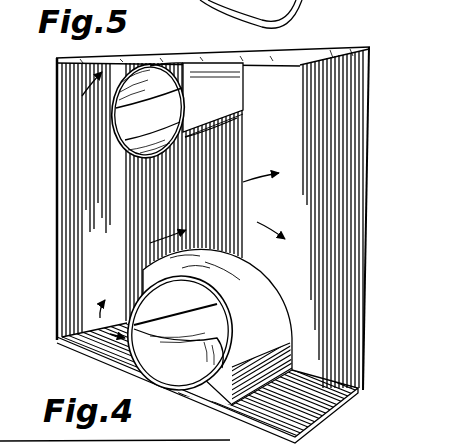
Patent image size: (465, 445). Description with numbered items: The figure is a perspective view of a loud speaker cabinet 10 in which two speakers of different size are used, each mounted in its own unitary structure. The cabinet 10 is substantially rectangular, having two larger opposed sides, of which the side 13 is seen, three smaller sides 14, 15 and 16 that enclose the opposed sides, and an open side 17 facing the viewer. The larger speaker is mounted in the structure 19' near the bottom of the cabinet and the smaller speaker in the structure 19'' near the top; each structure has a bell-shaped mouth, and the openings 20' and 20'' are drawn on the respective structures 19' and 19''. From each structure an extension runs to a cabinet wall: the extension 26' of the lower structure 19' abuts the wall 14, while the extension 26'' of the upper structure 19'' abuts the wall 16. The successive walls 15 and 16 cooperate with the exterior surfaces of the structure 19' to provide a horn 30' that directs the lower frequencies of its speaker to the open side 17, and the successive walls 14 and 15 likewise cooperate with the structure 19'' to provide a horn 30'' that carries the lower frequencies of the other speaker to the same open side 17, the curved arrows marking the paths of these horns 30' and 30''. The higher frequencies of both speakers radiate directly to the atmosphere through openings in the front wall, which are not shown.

In FIG. 5, the cabinet 10 is at (205, 229).
In FIG. 5, the opposed side 13 is at (362, 182).
In FIG. 5, the smaller side 14 is at (318, 56).
In FIG. 4, the smaller side 14 is at (157, 442).
In FIG. 5, the smaller side 15 is at (72, 190).
In FIG. 5, the smaller side 16 is at (302, 410).
In FIG. 5, the open side 17 is at (345, 310).
In FIG. 5, the structure 19' is at (143, 333).
In FIG. 5, the structure 19'' is at (104, 110).
In FIG. 5, the lower horn throat 20' is at (217, 315).
In FIG. 5, the upper horn throat 20'' is at (193, 113).
In FIG. 5, the extension 26' is at (262, 345).
In FIG. 5, the extension 26'' is at (235, 100).
In FIG. 5, the horn 30' is at (186, 280).
In FIG. 5, the horn 30'' is at (180, 134).